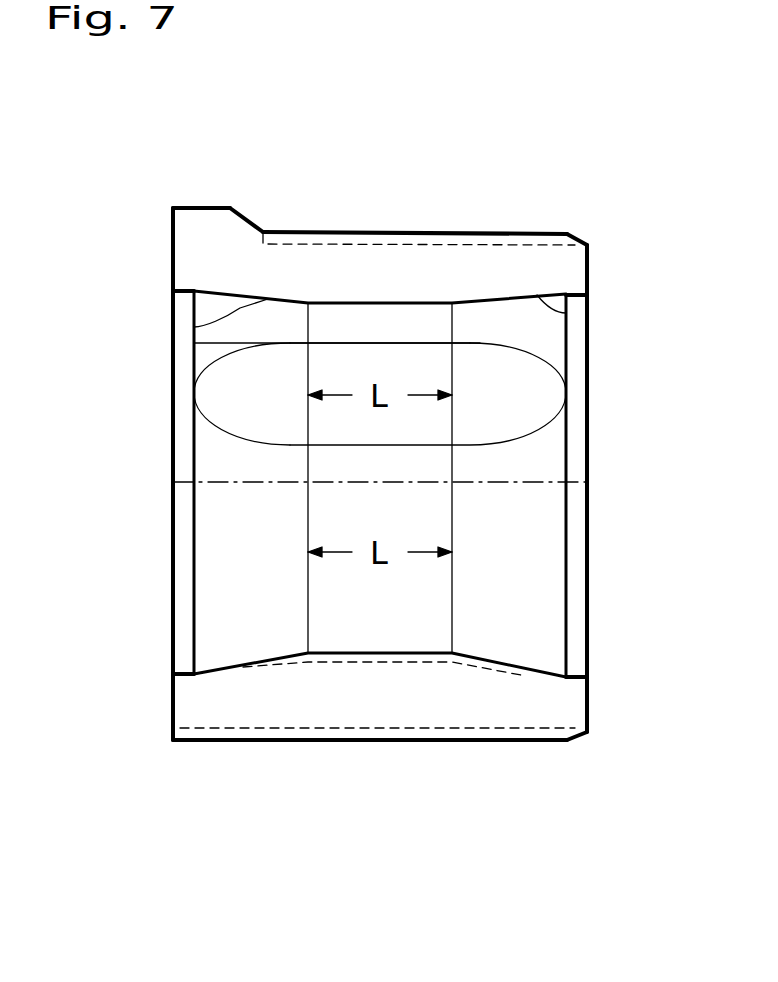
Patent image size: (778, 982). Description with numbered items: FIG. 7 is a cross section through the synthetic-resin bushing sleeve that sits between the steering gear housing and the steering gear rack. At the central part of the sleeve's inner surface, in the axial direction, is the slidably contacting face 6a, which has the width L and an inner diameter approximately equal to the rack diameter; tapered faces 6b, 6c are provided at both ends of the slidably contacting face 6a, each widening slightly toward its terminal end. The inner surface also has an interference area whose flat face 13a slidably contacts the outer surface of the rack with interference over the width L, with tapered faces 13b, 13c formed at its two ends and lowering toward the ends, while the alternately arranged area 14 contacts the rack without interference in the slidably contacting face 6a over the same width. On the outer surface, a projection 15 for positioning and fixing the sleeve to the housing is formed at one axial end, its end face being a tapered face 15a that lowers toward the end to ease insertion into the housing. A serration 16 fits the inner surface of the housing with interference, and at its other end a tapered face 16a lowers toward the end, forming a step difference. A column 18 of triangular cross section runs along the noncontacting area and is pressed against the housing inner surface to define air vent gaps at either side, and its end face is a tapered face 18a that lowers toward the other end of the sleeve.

The projection 15 is at (207, 208).
The tapered face 15a is at (246, 218).
The serration 16 is at (368, 232).
The tapered face 16a is at (572, 237).
The slidably contacting face 6a is at (194, 343).
The tapered face 6b is at (194, 327).
The tapered face 6c is at (566, 313).
The flat face 13a is at (422, 352).
The tapered face 13b is at (217, 392).
The tapered face 13c is at (498, 425).
The area 14 is at (414, 517).
The column 18 is at (398, 740).
The tapered face 18a is at (581, 743).